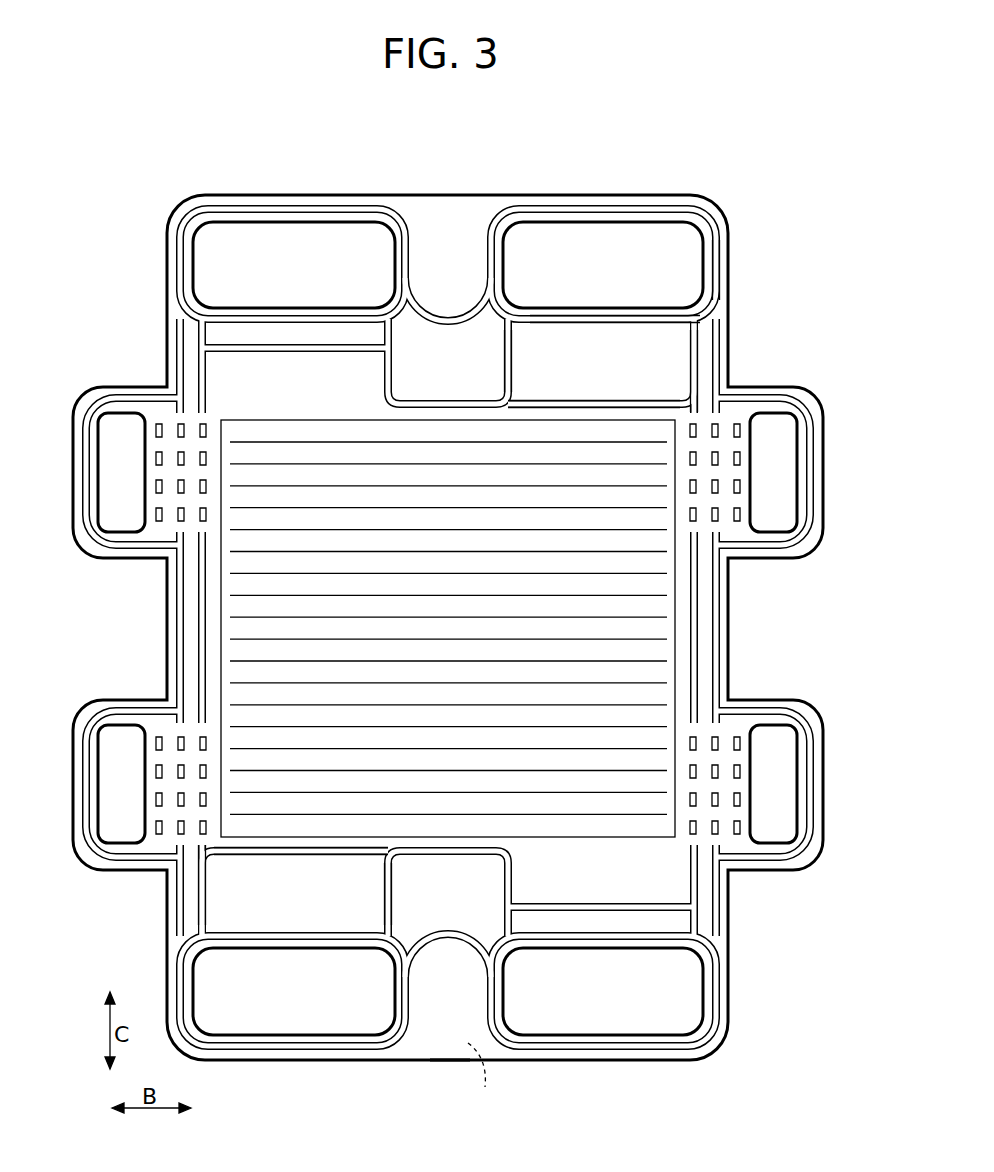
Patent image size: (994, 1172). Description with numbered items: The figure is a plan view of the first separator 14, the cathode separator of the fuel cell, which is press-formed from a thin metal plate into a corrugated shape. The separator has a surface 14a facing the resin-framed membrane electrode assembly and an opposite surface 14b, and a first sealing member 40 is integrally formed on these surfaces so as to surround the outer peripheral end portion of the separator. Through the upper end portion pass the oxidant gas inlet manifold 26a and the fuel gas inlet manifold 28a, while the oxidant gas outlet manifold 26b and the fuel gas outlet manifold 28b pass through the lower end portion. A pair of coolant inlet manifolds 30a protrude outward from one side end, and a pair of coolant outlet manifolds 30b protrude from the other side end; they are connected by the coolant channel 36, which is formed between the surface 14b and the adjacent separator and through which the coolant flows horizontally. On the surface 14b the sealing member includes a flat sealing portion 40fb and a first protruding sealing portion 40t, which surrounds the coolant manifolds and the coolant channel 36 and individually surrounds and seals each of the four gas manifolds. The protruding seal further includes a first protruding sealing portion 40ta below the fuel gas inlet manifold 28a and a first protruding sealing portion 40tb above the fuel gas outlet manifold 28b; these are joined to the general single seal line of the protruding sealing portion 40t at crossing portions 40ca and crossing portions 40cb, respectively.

The first separator 14 is at (585, 108).
The surface of the first separator 14a is at (489, 1080).
The surface of the first separator 14b is at (450, 1048).
The oxidant gas inlet manifold 26a is at (310, 243).
The oxidant gas outlet manifold 26b is at (628, 1020).
The fuel gas inlet manifold 28a is at (622, 243).
The fuel gas outlet manifold 28b is at (317, 1020).
The coolant inlet manifolds 30a is at (125, 428).
The coolant outlet manifolds 30b is at (773, 518).
The coolant channel 36 is at (572, 800).
The first sealing member 40 is at (423, 196).
The first protruding sealing portion 40t is at (715, 260).
The flat sealing portion 40fb is at (653, 318).
The first protruding sealing portion 40ta is at (568, 402).
The first protruding sealing portion 40tb is at (337, 853).
The crossing portions 40ca is at (508, 388).
The crossing portions 40cb is at (208, 863).